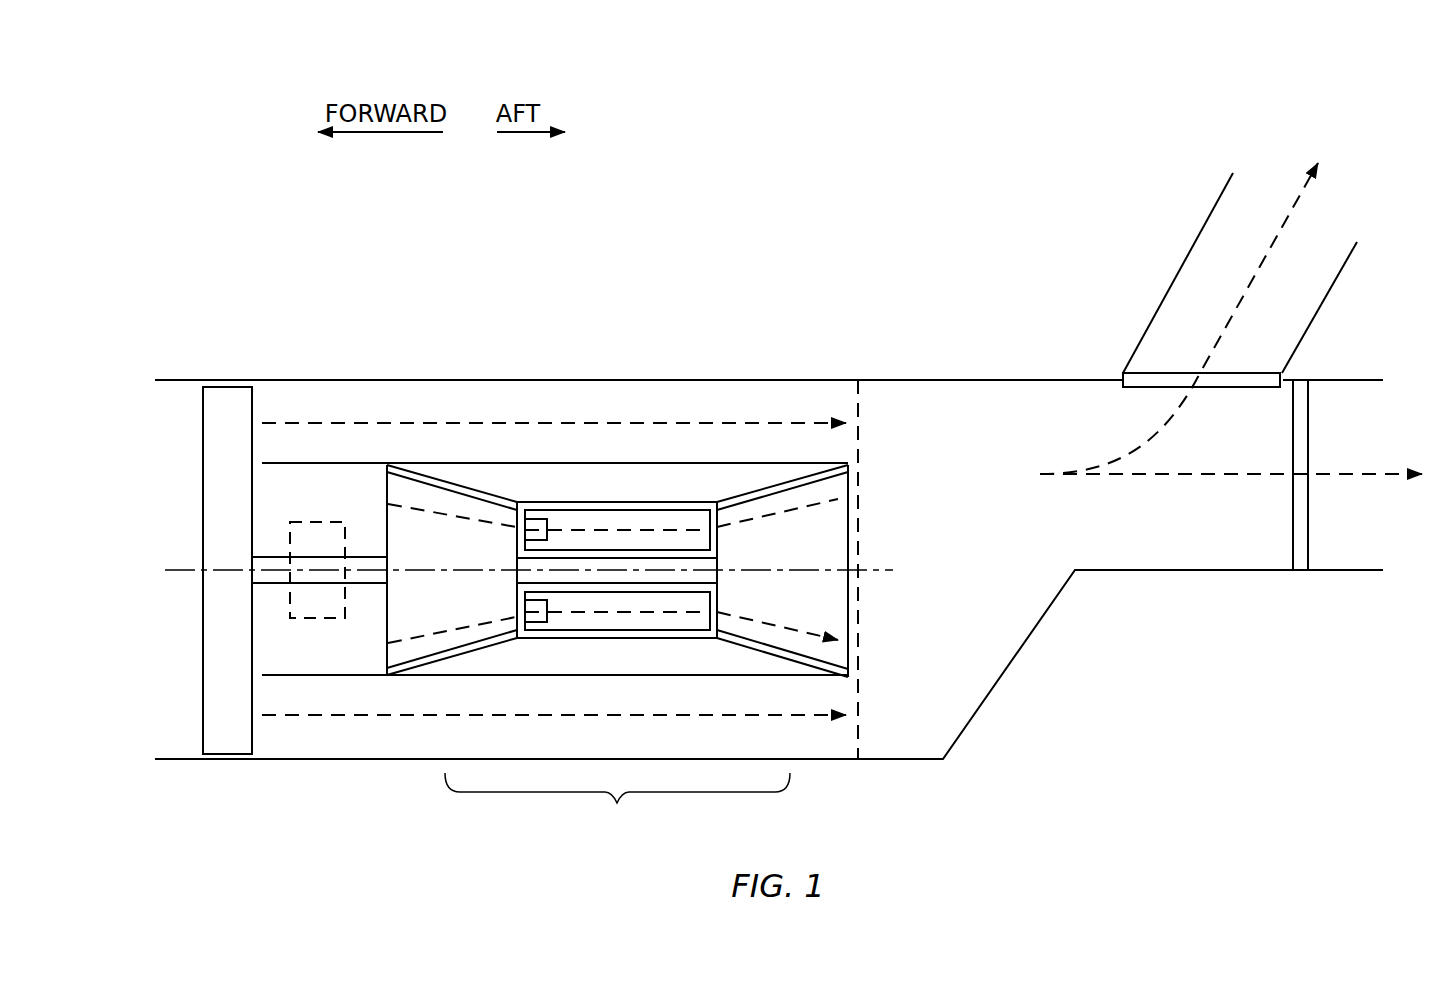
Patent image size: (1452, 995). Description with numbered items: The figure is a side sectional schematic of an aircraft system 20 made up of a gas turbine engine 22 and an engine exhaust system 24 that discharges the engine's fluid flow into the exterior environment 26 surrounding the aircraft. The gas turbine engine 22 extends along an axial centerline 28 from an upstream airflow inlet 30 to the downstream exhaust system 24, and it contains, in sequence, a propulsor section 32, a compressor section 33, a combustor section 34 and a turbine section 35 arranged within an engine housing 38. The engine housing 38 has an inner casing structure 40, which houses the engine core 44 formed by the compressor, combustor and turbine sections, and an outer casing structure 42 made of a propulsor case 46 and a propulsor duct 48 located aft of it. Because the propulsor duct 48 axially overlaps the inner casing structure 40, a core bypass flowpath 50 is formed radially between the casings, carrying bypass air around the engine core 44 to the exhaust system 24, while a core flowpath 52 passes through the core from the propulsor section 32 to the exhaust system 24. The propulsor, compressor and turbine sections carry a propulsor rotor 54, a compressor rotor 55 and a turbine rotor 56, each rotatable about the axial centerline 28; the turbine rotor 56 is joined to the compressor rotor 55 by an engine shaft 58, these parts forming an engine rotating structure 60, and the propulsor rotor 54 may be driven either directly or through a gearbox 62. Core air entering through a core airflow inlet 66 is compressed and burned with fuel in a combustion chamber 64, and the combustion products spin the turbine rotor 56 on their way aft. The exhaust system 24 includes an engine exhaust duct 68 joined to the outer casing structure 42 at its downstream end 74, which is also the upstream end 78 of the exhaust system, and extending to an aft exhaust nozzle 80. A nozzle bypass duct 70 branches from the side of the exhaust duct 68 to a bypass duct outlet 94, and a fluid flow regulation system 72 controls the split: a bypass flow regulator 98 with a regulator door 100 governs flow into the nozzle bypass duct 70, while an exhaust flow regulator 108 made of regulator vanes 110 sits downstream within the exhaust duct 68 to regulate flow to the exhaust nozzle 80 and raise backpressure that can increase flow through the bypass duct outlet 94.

The aircraft system 20 is at (232, 171).
The gas turbine engine 22 is at (248, 316).
The engine exhaust system 24 is at (1030, 240).
The exterior environment 26 is at (1411, 173).
The axial centerline 28 is at (170, 568).
The airflow inlet 30 is at (172, 425).
The propulsor section 32 is at (228, 780).
The compressor section 33 is at (479, 658).
The combustor section 34 is at (626, 648).
The turbine section 35 is at (761, 660).
The engine housing 38 is at (357, 370).
The inner casing structure 40 is at (466, 458).
The outer casing structure 42 is at (548, 377).
The engine core 44 is at (617, 804).
The propulsor case 46 is at (190, 378).
The propulsor duct 48 is at (618, 378).
The core bypass flowpath 50 is at (691, 413).
The core flowpath 52 is at (325, 501).
The propulsor rotor 54 is at (204, 682).
The compressor rotor 55 is at (385, 600).
The turbine rotor 56 is at (848, 600).
The engine shaft 58 is at (665, 557).
The engine rotating structure 60 is at (856, 513).
The gearbox 62 is at (348, 525).
The combustion chamber 64 is at (586, 520).
The core airflow inlet 66 is at (271, 509).
The engine exhaust duct 68 is at (986, 376).
The nozzle bypass duct 70 is at (1160, 262).
The fluid flow regulation system 72 is at (1322, 365).
The downstream end of the outer casing structure 74 is at (860, 380).
The upstream end of the exhaust system 78 is at (858, 380).
The exhaust nozzle 80 is at (1381, 409).
The bypass duct outlet 94 is at (1259, 185).
The bypass flow regulator 98 is at (1138, 396).
The regulator door 100 is at (1180, 373).
The exhaust flow regulator 108 is at (1316, 537).
The regulator vanes 110 is at (1293, 512).